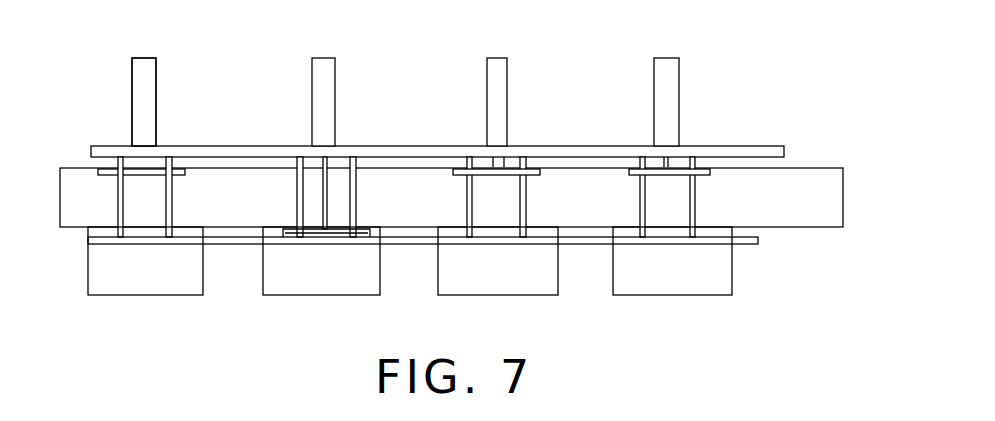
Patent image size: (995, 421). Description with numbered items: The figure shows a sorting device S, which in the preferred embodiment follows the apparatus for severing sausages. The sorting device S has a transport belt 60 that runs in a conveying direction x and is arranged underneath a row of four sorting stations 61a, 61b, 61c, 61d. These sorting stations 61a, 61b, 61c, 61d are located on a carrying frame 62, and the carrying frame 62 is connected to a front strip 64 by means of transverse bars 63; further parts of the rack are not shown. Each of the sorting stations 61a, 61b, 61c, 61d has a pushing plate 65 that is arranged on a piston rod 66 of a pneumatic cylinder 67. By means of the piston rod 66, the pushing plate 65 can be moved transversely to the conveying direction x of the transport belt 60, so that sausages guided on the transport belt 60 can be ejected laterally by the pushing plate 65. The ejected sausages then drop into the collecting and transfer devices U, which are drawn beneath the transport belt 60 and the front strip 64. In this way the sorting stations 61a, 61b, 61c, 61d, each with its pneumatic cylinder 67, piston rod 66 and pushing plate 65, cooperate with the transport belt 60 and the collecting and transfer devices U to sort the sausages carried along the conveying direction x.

The transport belt 60 is at (833, 180).
The sorting station 61a is at (176, 91).
The sorting station 61b is at (365, 98).
The sorting station 61c is at (526, 82).
The sorting station 61d is at (700, 71).
The carrying frame 62 is at (407, 150).
The transverse bars 63 is at (297, 207).
The front strip 64 is at (412, 241).
The pushing plate 65 is at (128, 168).
The piston rod 66 is at (145, 166).
The pneumatic cylinder 67 is at (140, 85).
The sorting device S is at (792, 92).
The collecting and transfer devices U is at (158, 306).
The conveying direction x is at (803, 198).